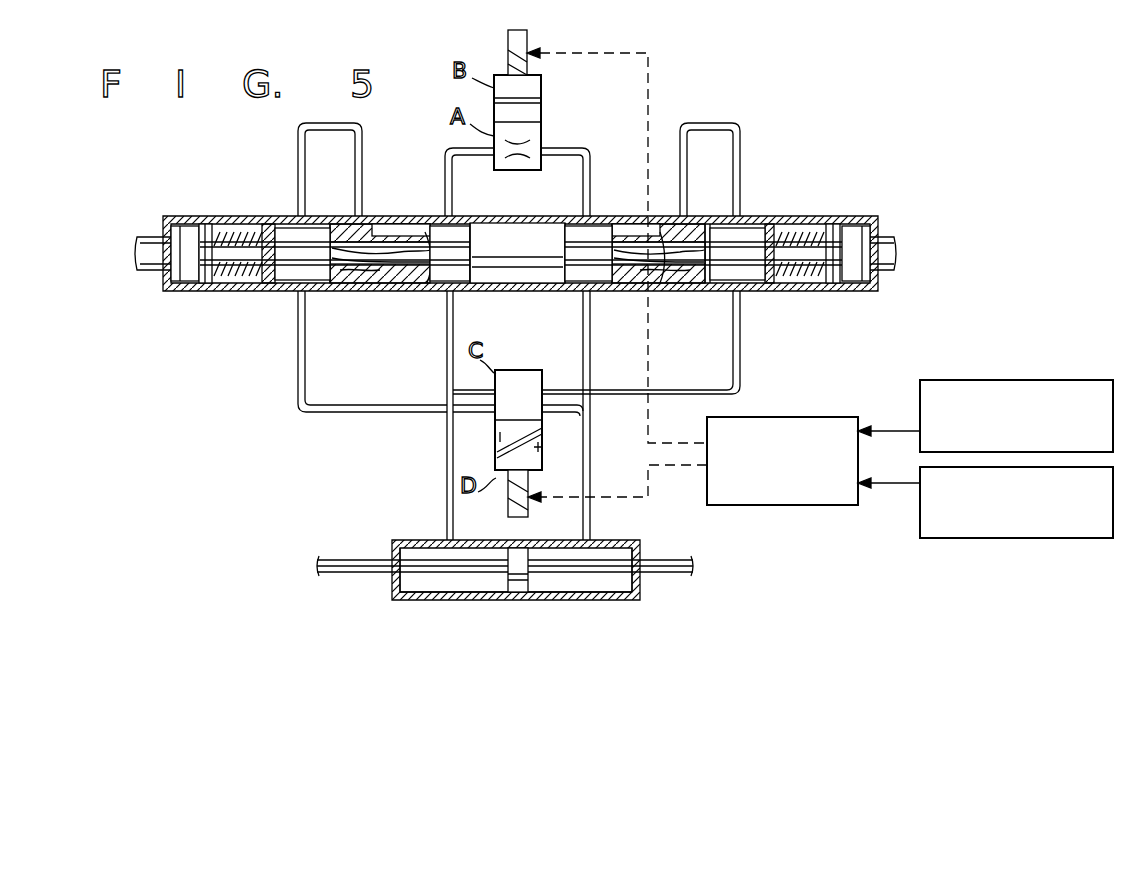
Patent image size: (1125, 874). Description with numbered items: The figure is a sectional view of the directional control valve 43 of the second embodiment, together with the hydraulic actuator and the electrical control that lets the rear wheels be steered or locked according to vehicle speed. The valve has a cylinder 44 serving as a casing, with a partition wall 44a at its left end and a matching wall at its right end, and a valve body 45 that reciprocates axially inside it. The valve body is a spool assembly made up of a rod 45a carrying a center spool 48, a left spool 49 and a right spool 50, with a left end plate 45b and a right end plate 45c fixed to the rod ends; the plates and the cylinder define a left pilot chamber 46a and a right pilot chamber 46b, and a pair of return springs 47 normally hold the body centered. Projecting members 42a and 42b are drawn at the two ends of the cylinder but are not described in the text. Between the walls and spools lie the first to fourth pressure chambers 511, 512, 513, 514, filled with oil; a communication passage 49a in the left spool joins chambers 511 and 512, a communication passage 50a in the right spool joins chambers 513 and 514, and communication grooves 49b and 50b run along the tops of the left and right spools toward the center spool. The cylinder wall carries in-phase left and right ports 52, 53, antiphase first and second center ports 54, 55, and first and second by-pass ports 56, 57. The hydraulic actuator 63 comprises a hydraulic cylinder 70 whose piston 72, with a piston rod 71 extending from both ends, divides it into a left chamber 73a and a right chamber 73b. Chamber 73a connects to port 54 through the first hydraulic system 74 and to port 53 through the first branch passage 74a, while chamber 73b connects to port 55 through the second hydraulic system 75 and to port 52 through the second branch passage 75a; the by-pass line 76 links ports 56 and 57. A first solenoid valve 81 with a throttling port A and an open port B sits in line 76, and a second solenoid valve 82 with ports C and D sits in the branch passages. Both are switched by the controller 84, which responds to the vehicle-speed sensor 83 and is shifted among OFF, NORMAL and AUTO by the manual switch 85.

The left push rod 42a is at (152, 240).
The right push rod 42b is at (878, 242).
The directional control valve 43 is at (774, 212).
The cylinder 44 is at (772, 290).
The partition wall 44a is at (268, 276).
The valve body 45 is at (640, 235).
The rod 45a is at (430, 275).
The left end plate 45b is at (204, 232).
The right end plate 45c is at (838, 288).
The left pilot chamber 46a is at (184, 272).
The right pilot chamber 46b is at (858, 285).
The return springs 47 is at (230, 276).
The center spool 48 is at (525, 278).
The left spool 49 is at (418, 268).
The communication passage 49a is at (355, 268).
The communication groove 49b is at (394, 232).
The right spool 50 is at (670, 268).
The communication passage 50a is at (668, 280).
The communication groove 50b is at (612, 222).
The first pressure chamber 511 is at (300, 243).
The second pressure chamber 512 is at (466, 232).
The third pressure chamber 513 is at (602, 232).
The fourth pressure chamber 514 is at (748, 282).
The left port 52 is at (342, 234).
The right port 53 is at (683, 240).
The first center port 54 is at (455, 278).
The second center port 55 is at (590, 278).
The first by-pass port 56 is at (457, 232).
The second by-pass port 57 is at (596, 232).
The hydraulic actuator 63 is at (650, 536).
The hydraulic cylinder 70 is at (596, 600).
The piston rod 71 is at (366, 574).
The piston 72 is at (516, 596).
The left chamber 73a is at (450, 596).
The right chamber 73b is at (630, 598).
The first hydraulic system 74 is at (447, 520).
The first branch passage 74a is at (740, 352).
The second hydraulic system 75 is at (588, 480).
The second branch passage 75a is at (298, 372).
The by-pass line 76 is at (575, 150).
The first solenoid valve 81 is at (541, 116).
The second solenoid valve 82 is at (500, 440).
The vehicle-speed sensor 83 is at (1062, 538).
The controller 84 is at (810, 416).
The manual switch 85 is at (1049, 386).